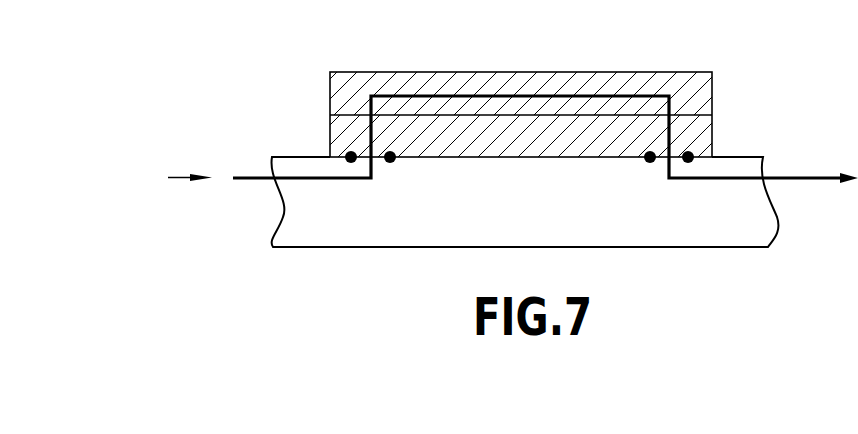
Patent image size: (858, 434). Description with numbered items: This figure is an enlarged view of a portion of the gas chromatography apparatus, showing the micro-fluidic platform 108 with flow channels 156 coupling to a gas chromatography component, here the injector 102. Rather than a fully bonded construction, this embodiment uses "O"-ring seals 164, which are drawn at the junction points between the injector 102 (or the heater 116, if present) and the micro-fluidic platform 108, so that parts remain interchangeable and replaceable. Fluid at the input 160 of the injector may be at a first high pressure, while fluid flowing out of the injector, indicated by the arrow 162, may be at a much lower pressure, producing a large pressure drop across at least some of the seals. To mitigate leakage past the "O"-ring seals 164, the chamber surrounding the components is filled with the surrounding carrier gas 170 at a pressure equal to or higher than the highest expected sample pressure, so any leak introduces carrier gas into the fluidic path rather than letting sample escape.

The injector 102 is at (703, 80).
The micro-fluidic platform 108 is at (723, 242).
The heater 116 is at (333, 144).
The flow channels 156 is at (532, 93).
The input 160 is at (175, 177).
The arrow 162 is at (837, 179).
The O-ring seals 164 is at (392, 163).
The surrounding carrier gas 170 is at (633, 35).